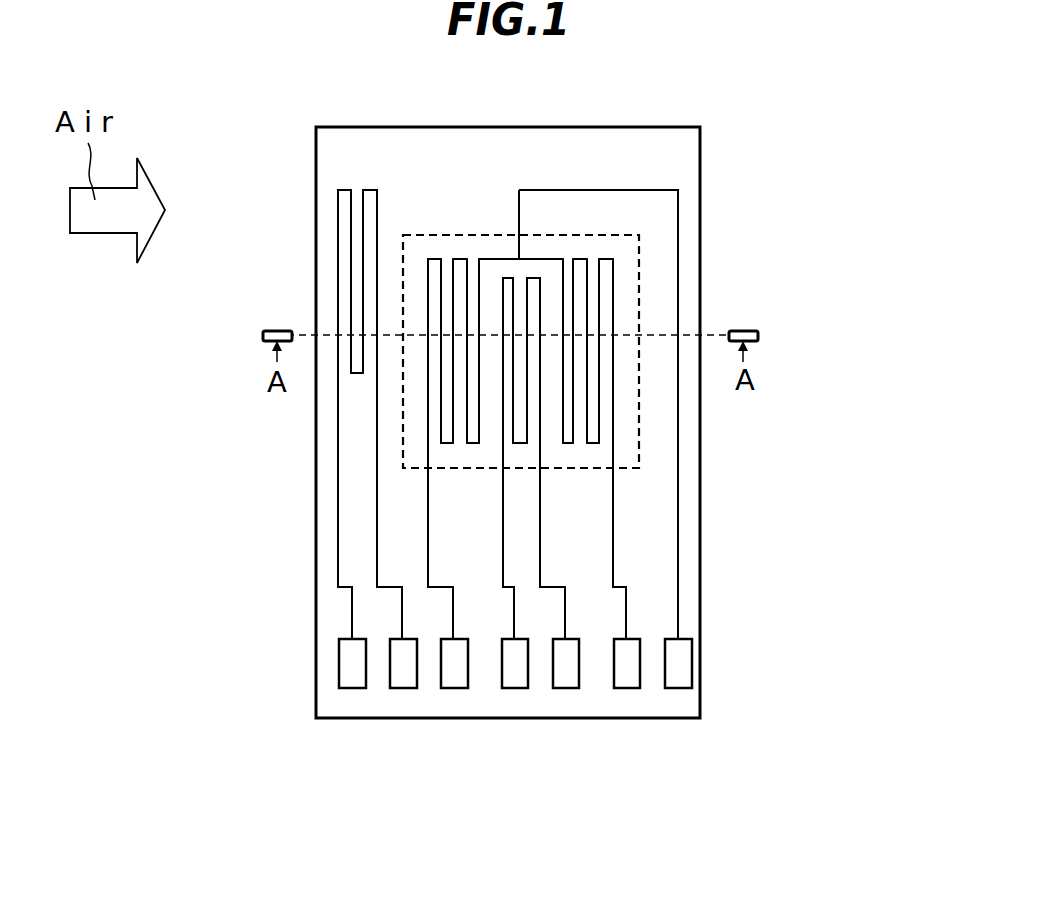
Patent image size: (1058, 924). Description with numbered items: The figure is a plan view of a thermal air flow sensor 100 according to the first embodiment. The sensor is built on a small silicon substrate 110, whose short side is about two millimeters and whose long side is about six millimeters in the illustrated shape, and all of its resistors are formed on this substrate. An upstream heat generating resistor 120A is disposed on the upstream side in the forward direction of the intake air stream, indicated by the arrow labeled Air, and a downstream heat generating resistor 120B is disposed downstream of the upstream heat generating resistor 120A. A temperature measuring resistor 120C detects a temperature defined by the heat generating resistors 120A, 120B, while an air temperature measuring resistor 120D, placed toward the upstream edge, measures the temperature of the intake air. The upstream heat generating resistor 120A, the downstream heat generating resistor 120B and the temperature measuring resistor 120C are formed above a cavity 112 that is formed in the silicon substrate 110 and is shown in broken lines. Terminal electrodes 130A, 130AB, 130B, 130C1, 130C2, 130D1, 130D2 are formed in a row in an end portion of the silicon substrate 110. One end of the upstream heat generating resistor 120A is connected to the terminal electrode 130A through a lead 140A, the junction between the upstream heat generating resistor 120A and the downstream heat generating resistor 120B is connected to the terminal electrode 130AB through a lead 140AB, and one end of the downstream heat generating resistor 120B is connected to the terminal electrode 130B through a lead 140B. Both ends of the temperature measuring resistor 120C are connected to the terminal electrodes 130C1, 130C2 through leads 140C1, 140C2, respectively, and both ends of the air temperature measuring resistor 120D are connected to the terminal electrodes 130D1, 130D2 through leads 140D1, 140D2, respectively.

The thermal air flow sensor 100 is at (828, 125).
The silicon substrate 110 is at (607, 146).
The cavity 112 is at (630, 443).
The upstream heat generating resistor 120A is at (427, 300).
The downstream heat generating resistor 120B is at (613, 268).
The temperature measuring resistor 120C is at (510, 283).
The air temperature measuring resistor 120D is at (340, 216).
The lead 140A is at (428, 495).
The lead 140B is at (615, 557).
The lead 140C1 is at (503, 498).
The lead 140C2 is at (540, 535).
The lead 140D1 is at (338, 568).
The lead 140D2 is at (378, 525).
The lead 140AB is at (678, 592).
The terminal electrode 130A is at (455, 682).
The terminal electrode 130B is at (630, 680).
The terminal electrode 130C1 is at (515, 678).
The terminal electrode 130C2 is at (566, 682).
The terminal electrode 130D1 is at (345, 673).
The terminal electrode 130D2 is at (400, 680).
The terminal electrode 130AB is at (683, 670).